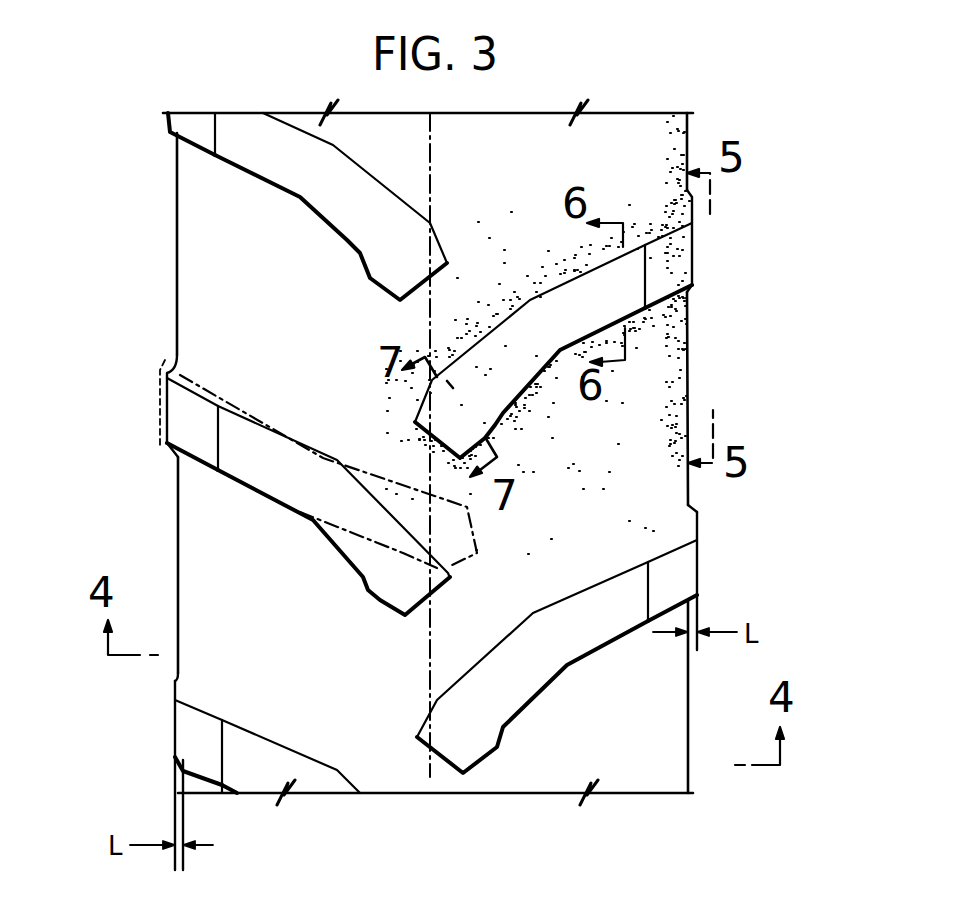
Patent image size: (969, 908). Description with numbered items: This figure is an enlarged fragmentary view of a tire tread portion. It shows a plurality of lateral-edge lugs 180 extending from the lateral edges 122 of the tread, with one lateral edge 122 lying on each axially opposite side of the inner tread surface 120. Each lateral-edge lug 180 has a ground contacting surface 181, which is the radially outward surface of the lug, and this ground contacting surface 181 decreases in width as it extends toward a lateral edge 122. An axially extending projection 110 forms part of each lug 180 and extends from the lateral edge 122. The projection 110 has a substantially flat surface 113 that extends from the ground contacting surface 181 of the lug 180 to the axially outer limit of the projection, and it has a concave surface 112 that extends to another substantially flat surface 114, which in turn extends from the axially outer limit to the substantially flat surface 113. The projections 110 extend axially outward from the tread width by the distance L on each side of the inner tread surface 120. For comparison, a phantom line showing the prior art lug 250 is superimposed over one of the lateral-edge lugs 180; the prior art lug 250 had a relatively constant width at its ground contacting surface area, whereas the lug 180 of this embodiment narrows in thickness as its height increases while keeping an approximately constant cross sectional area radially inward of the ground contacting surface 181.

The axially extending projection 110 is at (432, 491).
The concave surface 112 is at (175, 677).
The substantially flat surface 113 is at (183, 428).
The substantially flat surface 114 is at (165, 410).
The inner tread surface 120 is at (378, 710).
The lateral edge 122 is at (178, 495).
The lateral-edge lug 180 is at (432, 463).
The ground contacting surface 181 is at (353, 225).
The prior art lug 250 is at (477, 542).